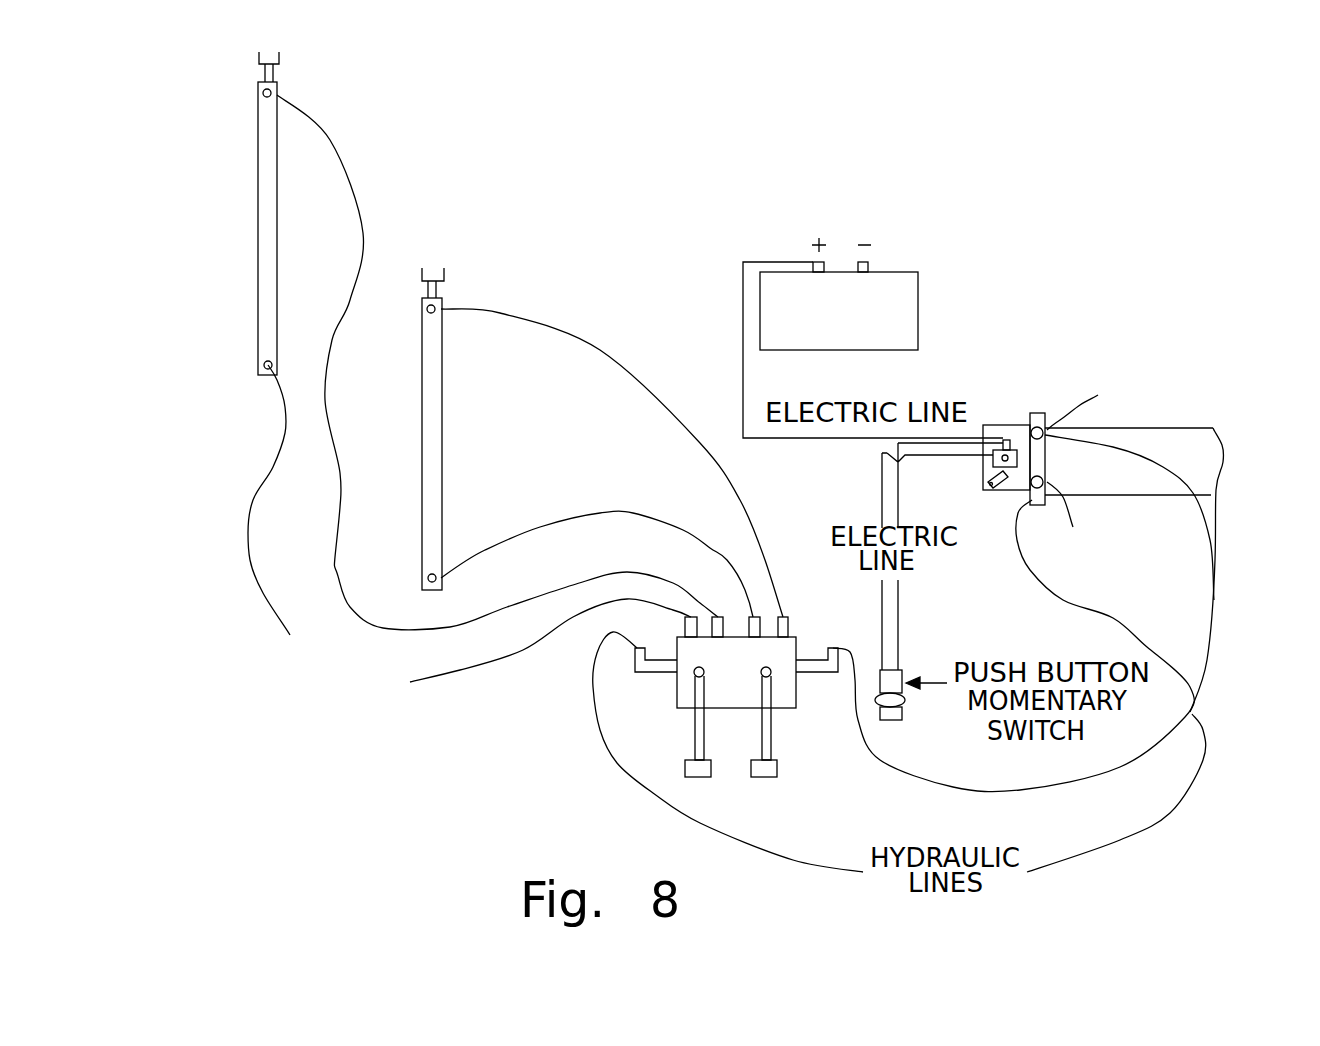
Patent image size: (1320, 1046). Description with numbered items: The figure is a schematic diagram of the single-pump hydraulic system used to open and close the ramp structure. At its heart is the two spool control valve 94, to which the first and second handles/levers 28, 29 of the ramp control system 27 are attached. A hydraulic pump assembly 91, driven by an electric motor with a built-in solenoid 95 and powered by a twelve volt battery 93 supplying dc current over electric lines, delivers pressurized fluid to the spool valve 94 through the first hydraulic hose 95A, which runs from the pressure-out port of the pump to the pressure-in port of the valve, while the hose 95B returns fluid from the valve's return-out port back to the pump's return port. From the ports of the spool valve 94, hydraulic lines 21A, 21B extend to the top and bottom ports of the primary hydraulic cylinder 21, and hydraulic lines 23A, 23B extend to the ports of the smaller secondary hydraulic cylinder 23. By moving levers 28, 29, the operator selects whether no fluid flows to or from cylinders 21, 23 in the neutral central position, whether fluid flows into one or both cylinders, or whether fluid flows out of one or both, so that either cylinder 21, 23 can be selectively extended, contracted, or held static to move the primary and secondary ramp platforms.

The primary hydraulic cylinder 21 is at (267, 240).
The hydraulic line 21A is at (248, 551).
The hydraulic line 21B is at (385, 502).
The secondary hydraulic cylinder 23 is at (432, 430).
The hydraulic line 23A is at (560, 337).
The hydraulic line 23B is at (525, 532).
The ramp control system 27 is at (647, 704).
The first handle/lever 28 is at (695, 737).
The second handle/lever 29 is at (770, 768).
The hydraulic pump assembly 91 is at (1130, 442).
The twelve volt battery 93 is at (912, 310).
The two spool control valve 94 is at (782, 652).
The built-in solenoid 95 is at (1013, 443).
The first hydraulic hose 95A is at (1217, 612).
The hydraulic hose 95B is at (1123, 626).